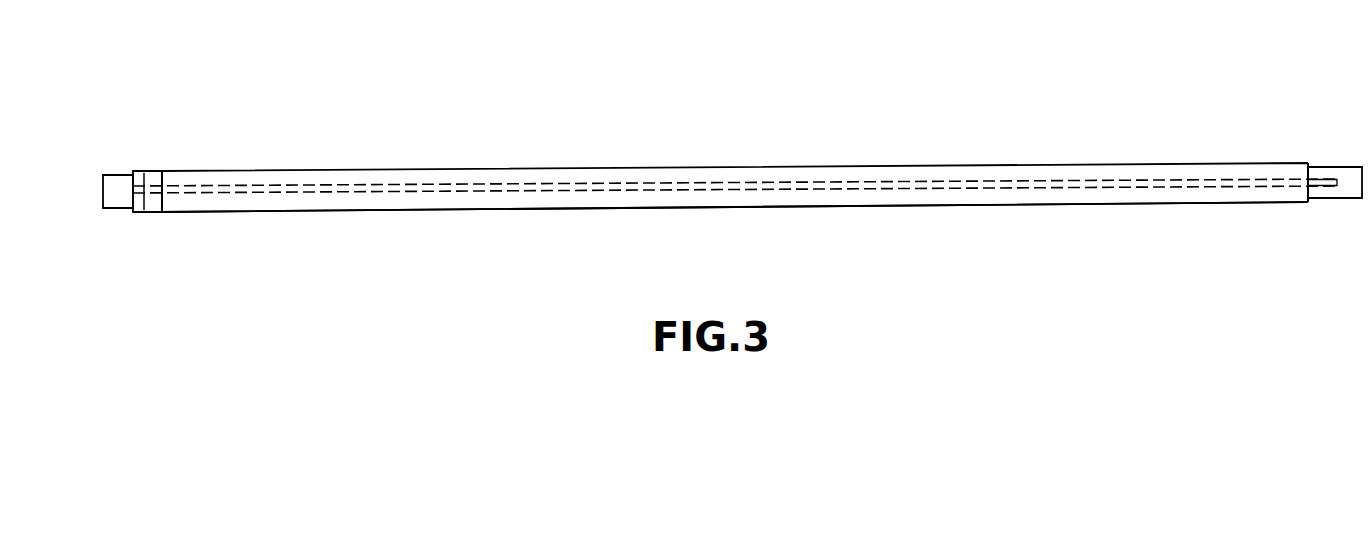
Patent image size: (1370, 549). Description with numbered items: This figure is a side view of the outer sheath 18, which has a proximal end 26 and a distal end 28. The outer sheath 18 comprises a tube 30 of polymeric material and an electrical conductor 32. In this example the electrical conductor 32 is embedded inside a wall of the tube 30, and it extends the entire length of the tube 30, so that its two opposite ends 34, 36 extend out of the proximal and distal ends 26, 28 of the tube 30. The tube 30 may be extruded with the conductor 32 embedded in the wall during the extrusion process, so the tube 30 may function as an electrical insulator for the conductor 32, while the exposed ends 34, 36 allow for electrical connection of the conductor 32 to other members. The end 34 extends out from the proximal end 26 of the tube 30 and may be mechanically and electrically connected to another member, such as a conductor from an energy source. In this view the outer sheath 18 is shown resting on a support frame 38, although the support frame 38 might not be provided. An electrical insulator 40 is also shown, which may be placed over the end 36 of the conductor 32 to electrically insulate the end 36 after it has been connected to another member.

The outer sheath 18 is at (698, 157).
The proximal end 26 is at (1268, 129).
The distal end 28 is at (143, 163).
The tube 30 is at (349, 210).
The electrical conductor 32 is at (458, 193).
The end of the electrical conductor 34 is at (1320, 176).
The end of the electrical conductor 36 is at (148, 194).
The support frame 38 is at (1357, 199).
The electrical insulator 40 is at (156, 212).